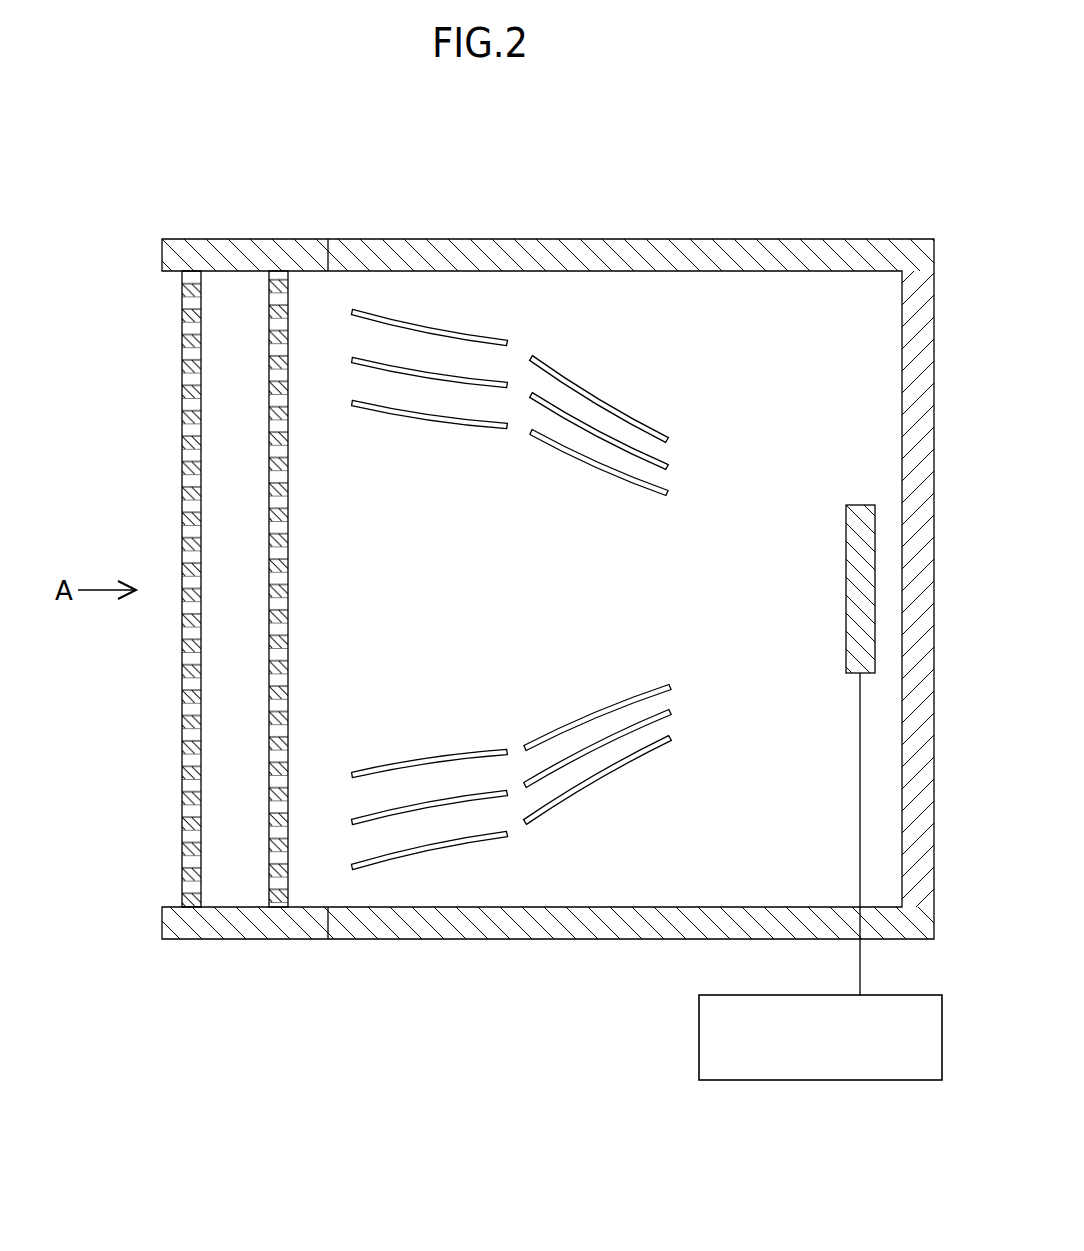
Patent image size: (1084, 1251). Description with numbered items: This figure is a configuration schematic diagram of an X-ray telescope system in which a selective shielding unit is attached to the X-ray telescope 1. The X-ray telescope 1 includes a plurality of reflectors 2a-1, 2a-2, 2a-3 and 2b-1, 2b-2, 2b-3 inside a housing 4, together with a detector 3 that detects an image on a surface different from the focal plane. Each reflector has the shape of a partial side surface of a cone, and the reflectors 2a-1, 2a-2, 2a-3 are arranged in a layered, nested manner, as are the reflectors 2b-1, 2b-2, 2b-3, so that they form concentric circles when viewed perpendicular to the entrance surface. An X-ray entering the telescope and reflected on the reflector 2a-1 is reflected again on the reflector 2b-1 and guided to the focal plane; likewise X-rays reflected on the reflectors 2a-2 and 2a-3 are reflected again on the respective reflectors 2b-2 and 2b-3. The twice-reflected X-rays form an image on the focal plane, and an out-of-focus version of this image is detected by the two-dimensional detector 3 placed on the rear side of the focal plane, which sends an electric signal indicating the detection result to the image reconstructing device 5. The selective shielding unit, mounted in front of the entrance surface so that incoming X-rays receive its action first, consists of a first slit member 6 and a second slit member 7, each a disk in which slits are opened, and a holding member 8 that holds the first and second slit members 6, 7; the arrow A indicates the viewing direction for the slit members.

The X-ray telescope 1 is at (531, 692).
The reflector 2a-1 is at (480, 335).
The reflector 2a-2 is at (407, 365).
The reflector 2a-3 is at (373, 408).
The reflector 2b-1 is at (627, 412).
The reflector 2b-2 is at (663, 458).
The reflector 2b-3 is at (568, 450).
The detector 3 is at (861, 505).
The housing 4 is at (590, 940).
The image reconstructing device 5 is at (820, 1082).
The first slit member 6 is at (182, 500).
The second slit member 7 is at (288, 538).
The holding member 8 is at (228, 940).